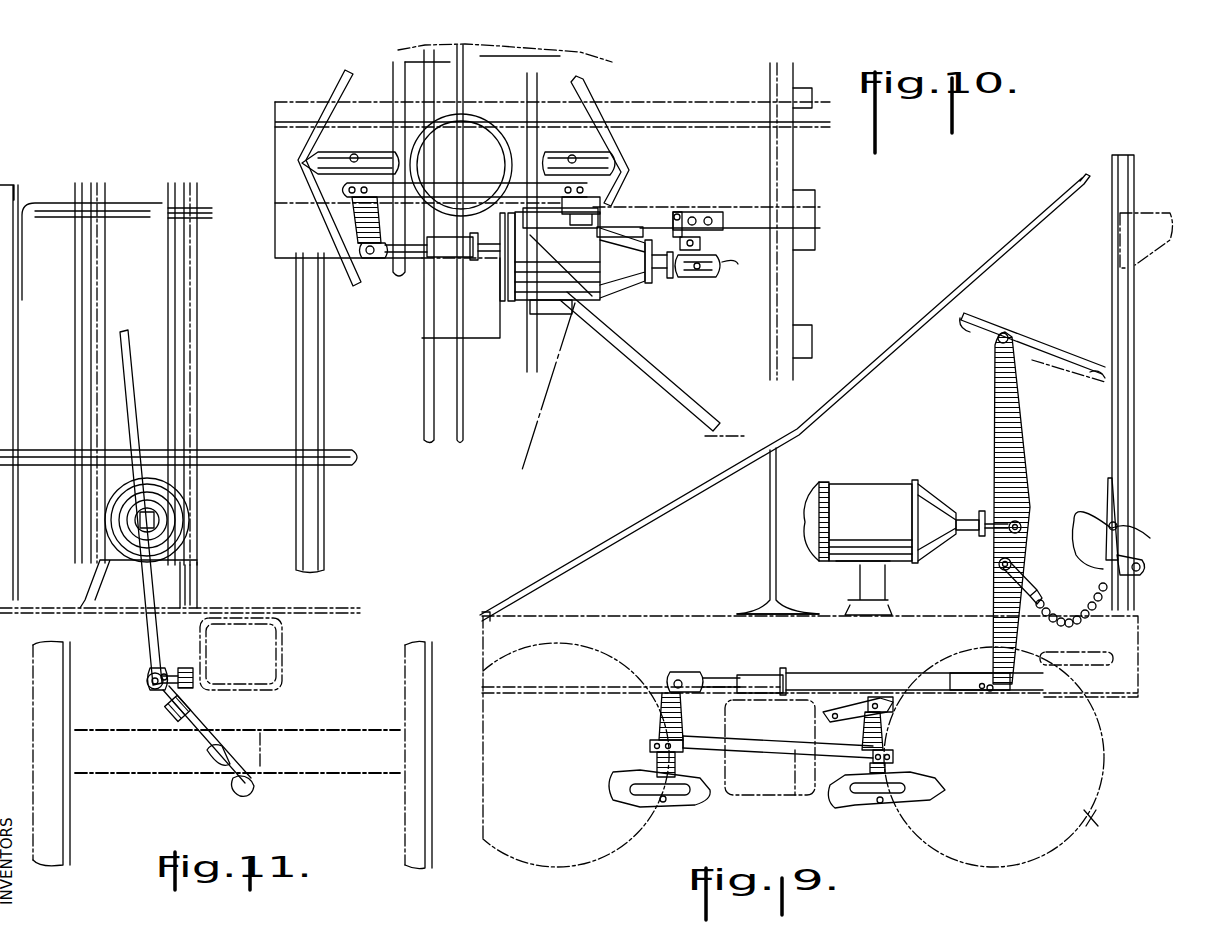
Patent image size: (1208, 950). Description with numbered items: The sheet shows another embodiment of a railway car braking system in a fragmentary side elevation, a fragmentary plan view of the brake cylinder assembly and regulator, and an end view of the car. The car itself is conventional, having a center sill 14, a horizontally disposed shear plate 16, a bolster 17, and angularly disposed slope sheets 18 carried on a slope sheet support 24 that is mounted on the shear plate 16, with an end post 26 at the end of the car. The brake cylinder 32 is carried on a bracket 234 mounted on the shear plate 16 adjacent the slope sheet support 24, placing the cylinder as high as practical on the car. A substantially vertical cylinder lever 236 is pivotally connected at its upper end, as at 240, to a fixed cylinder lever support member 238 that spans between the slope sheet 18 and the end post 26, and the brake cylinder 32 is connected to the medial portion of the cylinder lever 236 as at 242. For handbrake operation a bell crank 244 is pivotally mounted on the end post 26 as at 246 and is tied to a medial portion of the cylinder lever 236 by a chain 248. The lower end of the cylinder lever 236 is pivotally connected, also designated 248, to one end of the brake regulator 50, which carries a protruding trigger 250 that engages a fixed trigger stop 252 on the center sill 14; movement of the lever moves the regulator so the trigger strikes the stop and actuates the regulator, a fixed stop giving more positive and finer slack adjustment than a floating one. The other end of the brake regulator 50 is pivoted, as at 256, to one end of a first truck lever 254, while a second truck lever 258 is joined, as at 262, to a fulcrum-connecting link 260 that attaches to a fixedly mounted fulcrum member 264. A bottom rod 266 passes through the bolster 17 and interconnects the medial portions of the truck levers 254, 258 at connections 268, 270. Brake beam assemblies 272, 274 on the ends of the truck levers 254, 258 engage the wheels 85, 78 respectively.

In FIG. 10, the center sill 14 is at (690, 100).
In FIG. 9, the center sill 14 is at (660, 607).
In FIG. 11, the center sill 14 is at (283, 659).
In FIG. 10, the shear plate 16 is at (590, 68).
In FIG. 9, the shear plate 16 is at (816, 614).
In FIG. 9, the bolster 17 is at (750, 785).
In FIG. 9, the slope sheet 18 is at (640, 528).
In FIG. 9, the slope sheet support 24 is at (770, 540).
In FIG. 9, the end post 26 is at (1130, 415).
In FIG. 10, the brake cylinder 32 is at (634, 298).
In FIG. 9, the brake cylinder 32 is at (873, 495).
In FIG. 11, the brake cylinder 32 is at (185, 522).
In FIG. 10, the brake regulator 50 is at (487, 260).
In FIG. 9, the brake regulator 50 is at (808, 676).
In FIG. 11, the brake regulator 50 is at (146, 681).
In FIG. 9, the wheel 78 is at (1095, 822).
In FIG. 9, the wheel 85 is at (540, 858).
In FIG. 9, the bracket 234 is at (879, 580).
In FIG. 10, the cylinder lever 236 is at (738, 264).
In FIG. 9, the cylinder lever 236 is at (1018, 450).
In FIG. 11, the cylinder lever 236 is at (147, 588).
In FIG. 9, the cylinder lever support member 238 is at (1058, 348).
In FIG. 9, the pivotal connection 240 is at (1006, 334).
In FIG. 9, the connection 242 is at (1024, 525).
In FIG. 9, the bell crank 244 is at (1077, 545).
In FIG. 9, the pivotal mounting 246 is at (1116, 530).
In FIG. 10, the chain 248 is at (700, 280).
In FIG. 9, the chain 248 is at (1088, 612).
In FIG. 11, the chain 248 is at (150, 686).
In FIG. 10, the trigger 250 is at (676, 212).
In FIG. 9, the trigger 250 is at (988, 696).
In FIG. 11, the trigger 250 is at (165, 668).
In FIG. 10, the fixed trigger stop 252 is at (715, 212).
In FIG. 9, the fixed trigger stop 252 is at (985, 683).
In FIG. 11, the fixed trigger stop 252 is at (195, 665).
In FIG. 10, the first truck lever 254 is at (355, 213).
In FIG. 9, the first truck lever 254 is at (660, 704).
In FIG. 11, the first truck lever 254 is at (195, 735).
In FIG. 10, the pivotal connection 256 is at (370, 262).
In FIG. 9, the pivotal connection 256 is at (668, 676).
In FIG. 11, the pivotal connection 256 is at (156, 670).
In FIG. 10, the second truck lever 258 is at (598, 208).
In FIG. 9, the second truck lever 258 is at (882, 736).
In FIG. 9, the fulcrum-connecting link 260 is at (847, 707).
In FIG. 9, the connection 262 is at (890, 712).
In FIG. 9, the fulcrum member 264 is at (828, 712).
In FIG. 9, the bottom rod 266 is at (805, 770).
In FIG. 11, the bottom rod 266 is at (233, 752).
In FIG. 9, the connection 268 is at (650, 740).
In FIG. 9, the connection 270 is at (895, 752).
In FIG. 10, the brake beam assembly 272 is at (328, 161).
In FIG. 9, the brake beam assembly 272 is at (635, 788).
In FIG. 11, the brake beam assembly 272 is at (238, 800).
In FIG. 10, the brake beam assembly 274 is at (618, 158).
In FIG. 9, the brake beam assembly 274 is at (872, 810).